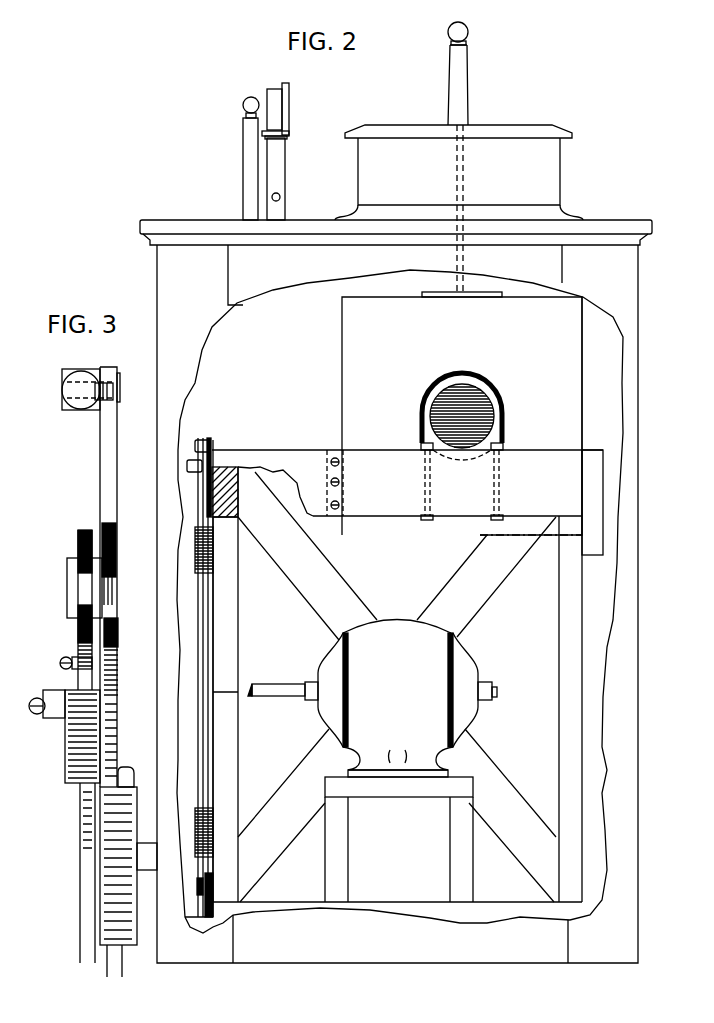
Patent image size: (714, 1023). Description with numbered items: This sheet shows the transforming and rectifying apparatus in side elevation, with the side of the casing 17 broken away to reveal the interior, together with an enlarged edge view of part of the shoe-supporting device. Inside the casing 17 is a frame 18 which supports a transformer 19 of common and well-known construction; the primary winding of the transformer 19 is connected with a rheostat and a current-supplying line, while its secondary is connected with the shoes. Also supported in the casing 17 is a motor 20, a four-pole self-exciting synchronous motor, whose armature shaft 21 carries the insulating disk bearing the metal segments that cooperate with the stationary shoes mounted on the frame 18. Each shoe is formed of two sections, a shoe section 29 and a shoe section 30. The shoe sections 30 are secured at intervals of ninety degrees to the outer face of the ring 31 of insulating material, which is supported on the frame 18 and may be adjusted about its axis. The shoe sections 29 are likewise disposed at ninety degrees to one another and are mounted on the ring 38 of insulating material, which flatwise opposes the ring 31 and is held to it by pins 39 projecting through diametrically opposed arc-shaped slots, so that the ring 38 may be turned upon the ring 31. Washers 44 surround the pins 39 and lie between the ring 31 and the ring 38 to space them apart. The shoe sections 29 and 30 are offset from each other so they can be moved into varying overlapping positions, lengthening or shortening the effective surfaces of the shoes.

In FIG. 2, the casing 17 is at (633, 530).
In FIG. 2, the frame 18 is at (575, 720).
In FIG. 2, the transformer 19 is at (575, 382).
In FIG. 2, the motor 20 is at (468, 668).
In FIG. 2, the armature shaft 21 is at (275, 687).
In FIG. 3, the shoe section 29 is at (68, 768).
In FIG. 3, the shoe section 30 is at (132, 787).
In FIG. 3, the ring 31 is at (128, 684).
In FIG. 3, the ring 38 is at (87, 867).
In FIG. 3, the pins 39 is at (72, 575).
In FIG. 3, the washers 44 is at (117, 557).